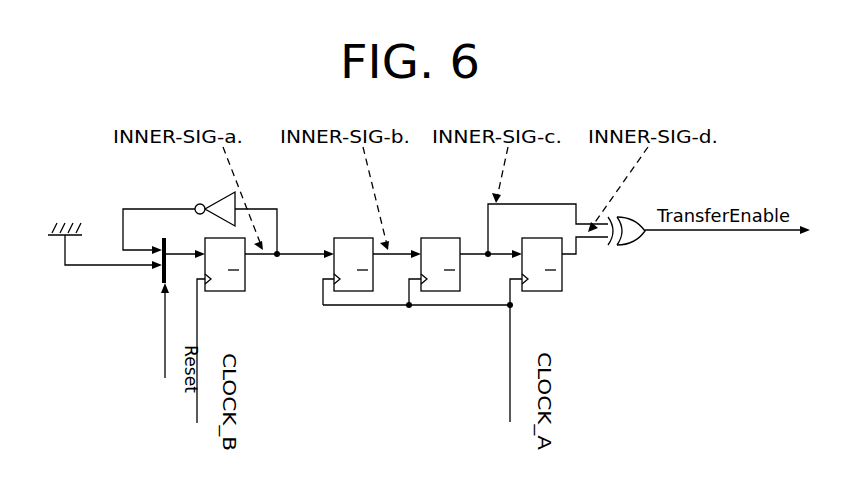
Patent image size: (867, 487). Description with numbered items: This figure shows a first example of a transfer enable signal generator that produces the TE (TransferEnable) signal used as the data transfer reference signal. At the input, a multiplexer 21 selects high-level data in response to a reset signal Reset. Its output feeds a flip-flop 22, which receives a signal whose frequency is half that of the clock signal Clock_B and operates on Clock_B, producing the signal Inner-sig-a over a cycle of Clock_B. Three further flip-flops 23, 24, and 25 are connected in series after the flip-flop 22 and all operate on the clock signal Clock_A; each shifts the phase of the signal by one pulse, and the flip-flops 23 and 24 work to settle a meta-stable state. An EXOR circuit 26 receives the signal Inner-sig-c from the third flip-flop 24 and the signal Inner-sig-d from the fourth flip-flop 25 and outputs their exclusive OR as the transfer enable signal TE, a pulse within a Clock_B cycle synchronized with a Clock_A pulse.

The multiplexer 21 is at (160, 277).
The flip-flop 22 is at (230, 292).
The flip-flop 23 is at (352, 292).
The flip-flop 24 is at (440, 292).
The flip-flop 25 is at (547, 292).
The EXOR circuit 26 is at (633, 246).